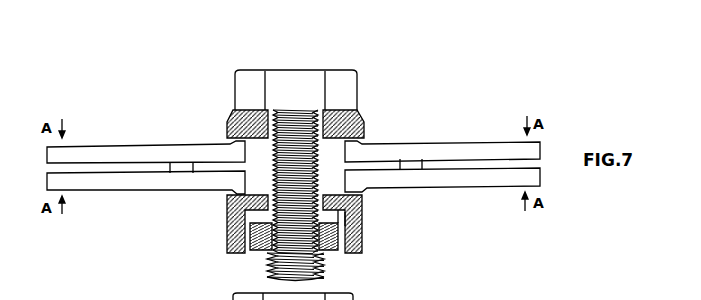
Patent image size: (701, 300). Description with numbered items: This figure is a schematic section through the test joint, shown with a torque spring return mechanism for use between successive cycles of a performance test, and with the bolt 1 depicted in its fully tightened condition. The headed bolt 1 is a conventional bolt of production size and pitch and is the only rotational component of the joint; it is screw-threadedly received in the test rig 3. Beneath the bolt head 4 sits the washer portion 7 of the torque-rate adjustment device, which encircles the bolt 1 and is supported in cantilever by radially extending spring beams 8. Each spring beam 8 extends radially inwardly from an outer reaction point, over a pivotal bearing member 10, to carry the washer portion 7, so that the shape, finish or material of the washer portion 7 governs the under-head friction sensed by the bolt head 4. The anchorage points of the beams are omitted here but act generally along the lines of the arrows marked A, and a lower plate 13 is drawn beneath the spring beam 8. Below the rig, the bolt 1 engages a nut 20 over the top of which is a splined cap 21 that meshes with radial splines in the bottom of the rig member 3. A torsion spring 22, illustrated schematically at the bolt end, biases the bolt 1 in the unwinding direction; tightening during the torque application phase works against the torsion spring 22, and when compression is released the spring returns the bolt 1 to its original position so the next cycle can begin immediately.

The headed bolt 1 is at (323, 121).
The test rig 3 is at (227, 230).
The bolt head 4 is at (314, 73).
The washer portion 7 is at (233, 117).
The spring beam 8 is at (137, 153).
The pivotal bearing member 10 is at (185, 163).
The lower plate 13 is at (158, 182).
The nut 20 is at (340, 234).
The splined cap 21 is at (345, 211).
The torsion spring 22 is at (267, 267).